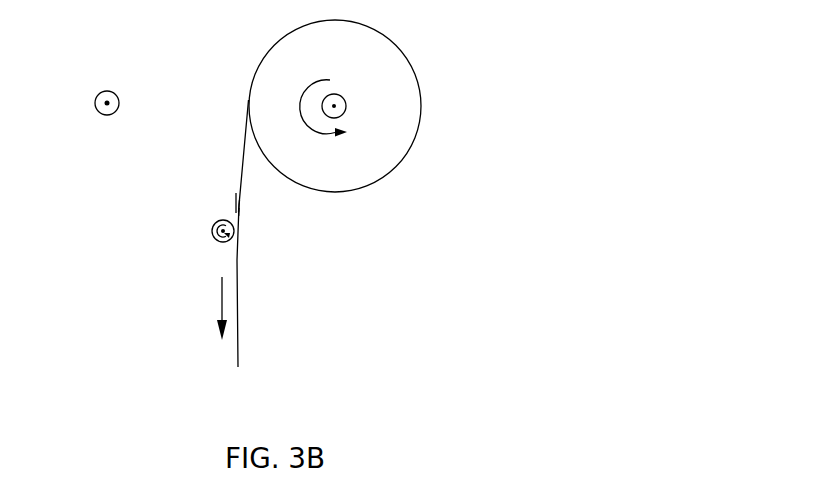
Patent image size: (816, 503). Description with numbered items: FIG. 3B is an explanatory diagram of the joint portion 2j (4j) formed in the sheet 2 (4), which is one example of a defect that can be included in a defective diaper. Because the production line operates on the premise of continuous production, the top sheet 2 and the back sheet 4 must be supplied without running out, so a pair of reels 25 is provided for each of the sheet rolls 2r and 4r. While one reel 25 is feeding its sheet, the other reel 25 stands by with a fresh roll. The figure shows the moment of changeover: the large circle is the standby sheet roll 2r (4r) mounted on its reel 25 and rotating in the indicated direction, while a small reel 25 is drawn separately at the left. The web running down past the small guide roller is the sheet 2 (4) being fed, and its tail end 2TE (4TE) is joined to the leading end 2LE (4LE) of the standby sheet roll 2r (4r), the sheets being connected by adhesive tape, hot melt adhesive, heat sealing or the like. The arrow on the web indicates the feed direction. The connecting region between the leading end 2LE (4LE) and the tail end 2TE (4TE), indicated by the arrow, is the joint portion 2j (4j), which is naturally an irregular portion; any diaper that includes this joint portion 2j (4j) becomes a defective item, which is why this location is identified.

The top sheet 2 is at (193, 233).
The back sheet 4 is at (243, 143).
The sheet roll 2r is at (388, 106).
The sheet roll 4r is at (403, 103).
The reel 25 is at (343, 93).
The tail end 2TE is at (153, 204).
The tail end 4TE is at (233, 202).
The leading end 2LE is at (319, 217).
The leading end 4LE is at (241, 203).
The joint portion 2j is at (289, 246).
The joint portion 4j is at (251, 214).